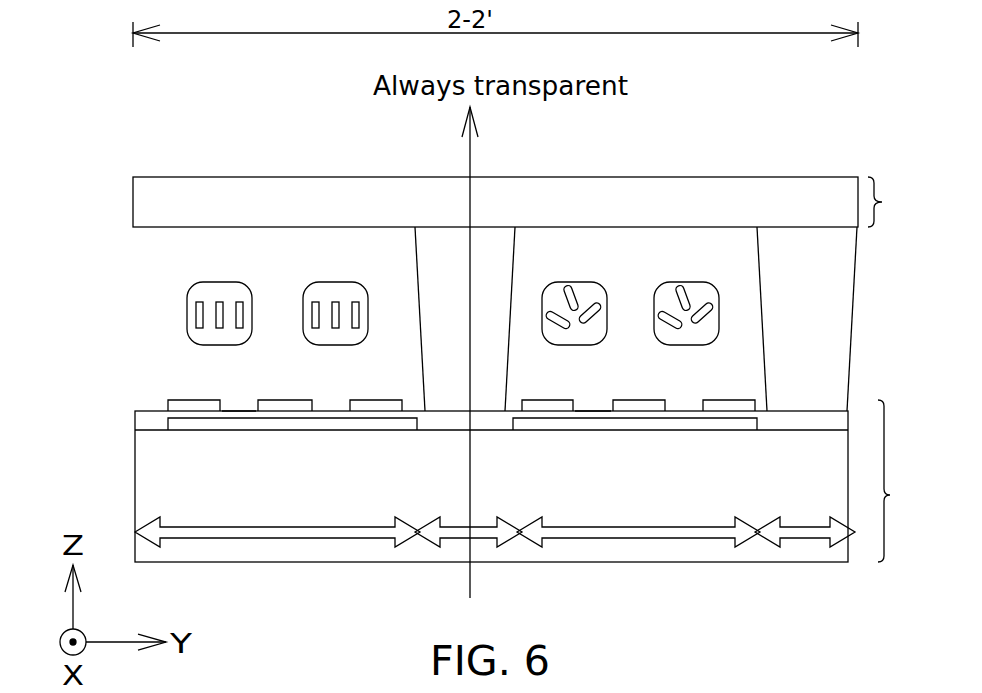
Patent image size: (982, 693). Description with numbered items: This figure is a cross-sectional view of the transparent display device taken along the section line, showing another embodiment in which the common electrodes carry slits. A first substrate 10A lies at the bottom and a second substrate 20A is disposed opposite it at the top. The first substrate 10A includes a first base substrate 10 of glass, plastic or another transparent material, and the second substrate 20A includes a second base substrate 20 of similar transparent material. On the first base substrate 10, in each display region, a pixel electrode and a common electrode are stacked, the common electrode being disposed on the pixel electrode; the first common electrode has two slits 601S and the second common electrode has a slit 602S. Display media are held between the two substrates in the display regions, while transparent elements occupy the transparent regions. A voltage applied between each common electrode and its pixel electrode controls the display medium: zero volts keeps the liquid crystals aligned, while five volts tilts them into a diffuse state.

The second base substrate 20 is at (449, 218).
The second substrate 20A is at (907, 202).
The first base substrate 10 is at (529, 468).
The first substrate 10A is at (912, 481).
The slit 601S is at (252, 404).
The slit 602S is at (605, 404).